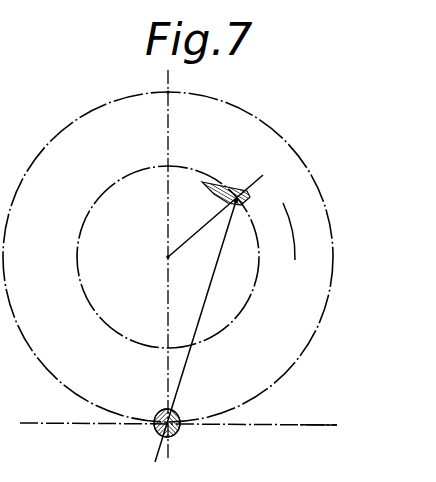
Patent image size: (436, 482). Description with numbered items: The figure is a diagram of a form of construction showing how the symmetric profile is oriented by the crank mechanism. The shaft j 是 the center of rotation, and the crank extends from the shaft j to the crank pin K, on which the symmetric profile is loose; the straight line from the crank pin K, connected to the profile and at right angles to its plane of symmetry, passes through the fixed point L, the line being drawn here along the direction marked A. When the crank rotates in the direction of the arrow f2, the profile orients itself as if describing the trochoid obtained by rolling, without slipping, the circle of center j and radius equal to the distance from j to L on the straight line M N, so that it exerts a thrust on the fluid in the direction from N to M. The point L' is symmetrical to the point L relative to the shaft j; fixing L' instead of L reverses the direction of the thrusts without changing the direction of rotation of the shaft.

The point L¹ symmetrical of L L' is at (181, 262).
The shaft j is at (155, 257).
The line through j and K A is at (223, 208).
The crank pin K is at (207, 322).
The arrow f2 is at (301, 231).
The point L is at (157, 417).
The point M of straight line M N M is at (178, 413).
The point N of straight line M N is at (318, 414).